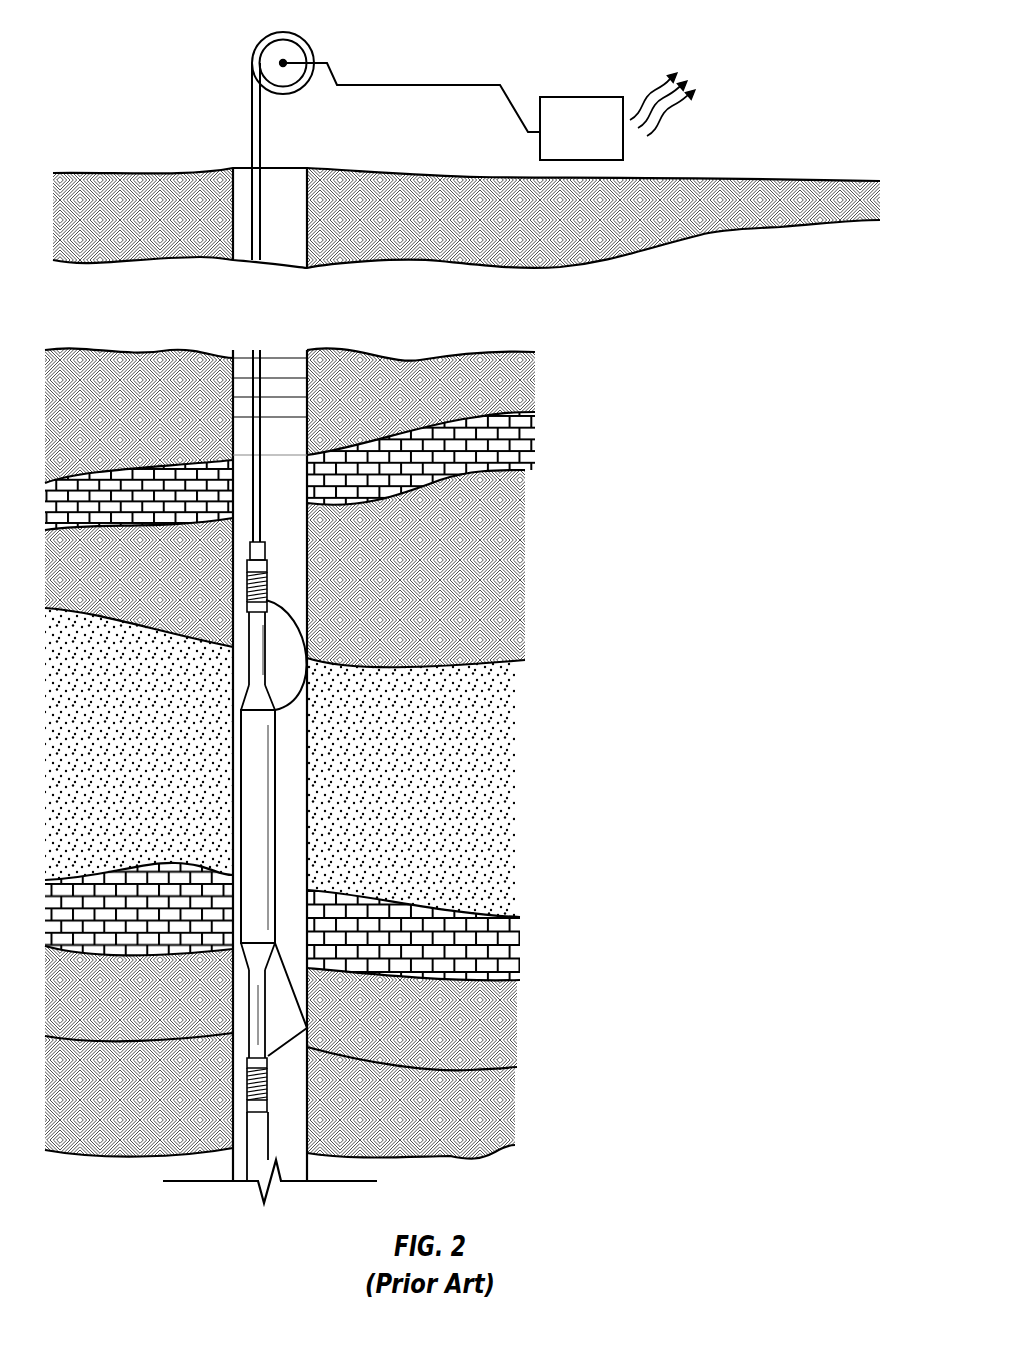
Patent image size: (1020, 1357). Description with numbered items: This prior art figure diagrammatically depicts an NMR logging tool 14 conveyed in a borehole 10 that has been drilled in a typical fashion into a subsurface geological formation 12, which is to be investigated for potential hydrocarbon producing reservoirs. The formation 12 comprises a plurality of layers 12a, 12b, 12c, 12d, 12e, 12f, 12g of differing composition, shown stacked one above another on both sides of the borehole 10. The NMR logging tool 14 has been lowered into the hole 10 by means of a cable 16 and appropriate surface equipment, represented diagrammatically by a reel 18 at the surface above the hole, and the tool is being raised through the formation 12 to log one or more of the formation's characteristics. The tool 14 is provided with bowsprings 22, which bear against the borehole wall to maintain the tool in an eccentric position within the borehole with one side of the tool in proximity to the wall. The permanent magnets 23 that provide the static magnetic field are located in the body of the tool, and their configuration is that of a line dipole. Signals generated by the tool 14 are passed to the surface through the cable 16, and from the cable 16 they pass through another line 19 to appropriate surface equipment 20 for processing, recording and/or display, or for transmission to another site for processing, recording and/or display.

The borehole 10 is at (301, 247).
The subsurface geological formation 12 is at (342, 753).
The formation layer 12a is at (510, 388).
The formation layer 12b is at (505, 448).
The formation layer 12c is at (495, 568).
The formation layer 12d is at (487, 757).
The formation layer 12e is at (495, 950).
The formation layer 12f is at (500, 1023).
The formation layer 12g is at (497, 1114).
The NMR logging tool 14 is at (275, 861).
The cable 16 is at (253, 130).
The reel 18 is at (290, 33).
The line 19 is at (415, 85).
The surface equipment 20 is at (570, 97).
The bowsprings 22 is at (297, 685).
The permanent magnets 23 is at (277, 808).